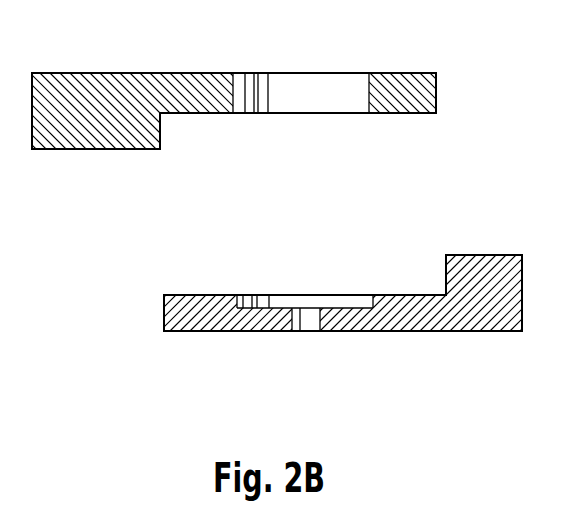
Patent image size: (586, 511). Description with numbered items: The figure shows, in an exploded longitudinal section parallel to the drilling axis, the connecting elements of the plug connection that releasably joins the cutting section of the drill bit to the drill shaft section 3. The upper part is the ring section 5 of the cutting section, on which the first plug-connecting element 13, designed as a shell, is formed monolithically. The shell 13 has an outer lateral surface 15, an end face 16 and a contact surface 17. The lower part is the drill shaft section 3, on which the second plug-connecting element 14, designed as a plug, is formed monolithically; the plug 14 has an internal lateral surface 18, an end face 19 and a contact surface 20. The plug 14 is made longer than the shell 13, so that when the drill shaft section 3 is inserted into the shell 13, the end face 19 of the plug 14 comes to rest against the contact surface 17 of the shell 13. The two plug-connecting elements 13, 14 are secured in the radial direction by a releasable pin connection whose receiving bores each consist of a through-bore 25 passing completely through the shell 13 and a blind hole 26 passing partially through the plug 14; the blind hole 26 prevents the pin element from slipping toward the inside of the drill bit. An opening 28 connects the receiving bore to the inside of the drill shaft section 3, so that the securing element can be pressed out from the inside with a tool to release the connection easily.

The ring section 5 is at (88, 93).
The through-bore 25 is at (308, 95).
The first plug-connecting element 13 is at (401, 91).
The end face 16 is at (444, 91).
The outer lateral surface 15 is at (395, 113).
The contact surface 17 is at (169, 132).
The second plug-connecting element 14 is at (207, 315).
The internal lateral surface 18 is at (200, 287).
The end face 19 is at (156, 308).
The blind hole 26 is at (300, 303).
The opening 28 is at (308, 318).
The contact surface 20 is at (439, 273).
The drill shaft section 3 is at (480, 285).